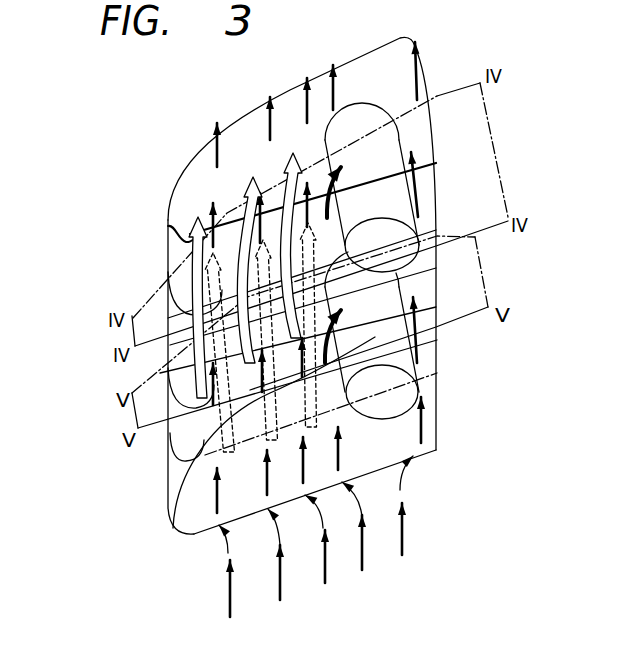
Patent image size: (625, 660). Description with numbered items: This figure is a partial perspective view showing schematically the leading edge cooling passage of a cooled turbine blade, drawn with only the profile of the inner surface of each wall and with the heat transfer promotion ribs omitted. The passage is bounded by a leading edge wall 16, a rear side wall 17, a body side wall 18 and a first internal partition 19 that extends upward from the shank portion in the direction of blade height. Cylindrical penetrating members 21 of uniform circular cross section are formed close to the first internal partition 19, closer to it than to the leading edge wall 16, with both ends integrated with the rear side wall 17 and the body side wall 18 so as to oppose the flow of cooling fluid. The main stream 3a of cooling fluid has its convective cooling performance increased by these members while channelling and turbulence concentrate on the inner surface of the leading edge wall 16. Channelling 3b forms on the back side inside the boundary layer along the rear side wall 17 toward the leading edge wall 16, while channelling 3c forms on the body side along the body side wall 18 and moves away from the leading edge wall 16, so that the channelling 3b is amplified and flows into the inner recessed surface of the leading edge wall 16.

The main stream of the cooling fluid 3a is at (325, 568).
The channelling on the back side 3b is at (168, 226).
The channelling on the body side 3c is at (236, 403).
The leading edge wall 16 is at (175, 535).
The rear side wall 17 is at (247, 116).
The body side wall 18 is at (358, 480).
The first internal partition 19 is at (432, 136).
The cylindrical penetrating members 21 is at (396, 385).